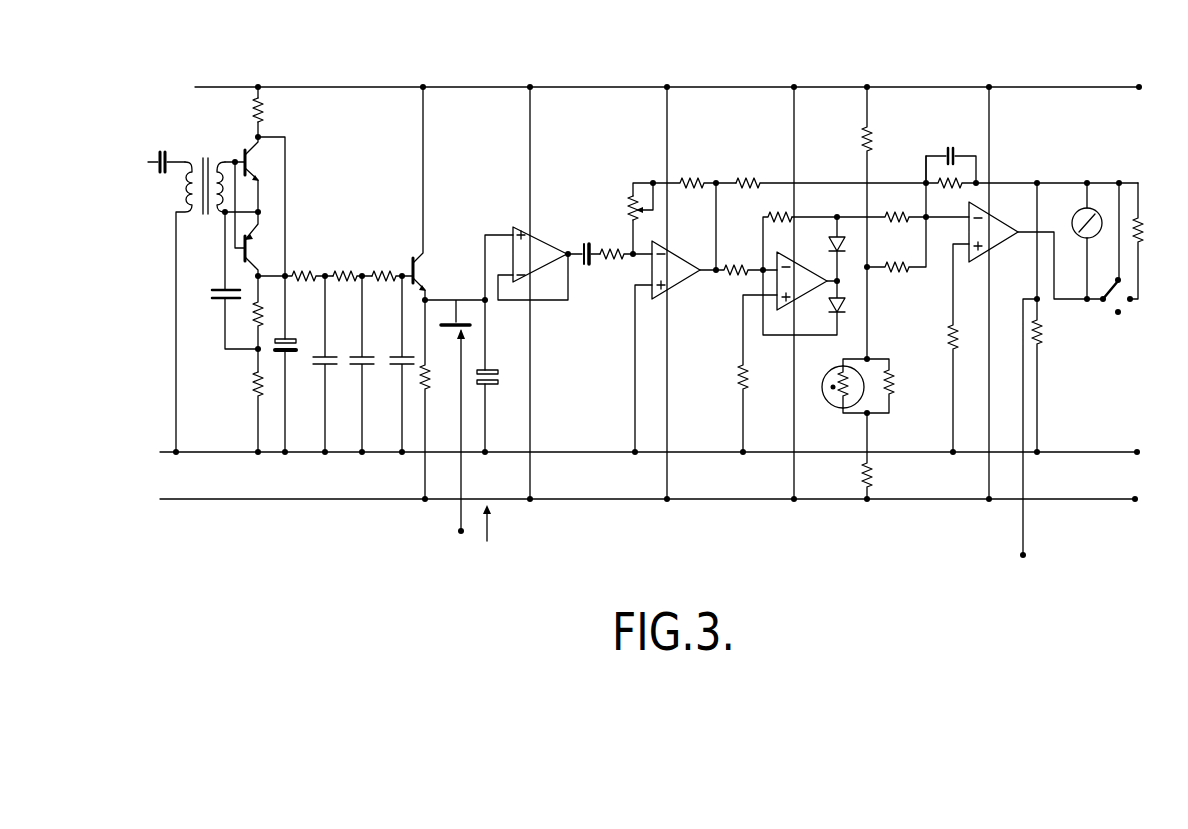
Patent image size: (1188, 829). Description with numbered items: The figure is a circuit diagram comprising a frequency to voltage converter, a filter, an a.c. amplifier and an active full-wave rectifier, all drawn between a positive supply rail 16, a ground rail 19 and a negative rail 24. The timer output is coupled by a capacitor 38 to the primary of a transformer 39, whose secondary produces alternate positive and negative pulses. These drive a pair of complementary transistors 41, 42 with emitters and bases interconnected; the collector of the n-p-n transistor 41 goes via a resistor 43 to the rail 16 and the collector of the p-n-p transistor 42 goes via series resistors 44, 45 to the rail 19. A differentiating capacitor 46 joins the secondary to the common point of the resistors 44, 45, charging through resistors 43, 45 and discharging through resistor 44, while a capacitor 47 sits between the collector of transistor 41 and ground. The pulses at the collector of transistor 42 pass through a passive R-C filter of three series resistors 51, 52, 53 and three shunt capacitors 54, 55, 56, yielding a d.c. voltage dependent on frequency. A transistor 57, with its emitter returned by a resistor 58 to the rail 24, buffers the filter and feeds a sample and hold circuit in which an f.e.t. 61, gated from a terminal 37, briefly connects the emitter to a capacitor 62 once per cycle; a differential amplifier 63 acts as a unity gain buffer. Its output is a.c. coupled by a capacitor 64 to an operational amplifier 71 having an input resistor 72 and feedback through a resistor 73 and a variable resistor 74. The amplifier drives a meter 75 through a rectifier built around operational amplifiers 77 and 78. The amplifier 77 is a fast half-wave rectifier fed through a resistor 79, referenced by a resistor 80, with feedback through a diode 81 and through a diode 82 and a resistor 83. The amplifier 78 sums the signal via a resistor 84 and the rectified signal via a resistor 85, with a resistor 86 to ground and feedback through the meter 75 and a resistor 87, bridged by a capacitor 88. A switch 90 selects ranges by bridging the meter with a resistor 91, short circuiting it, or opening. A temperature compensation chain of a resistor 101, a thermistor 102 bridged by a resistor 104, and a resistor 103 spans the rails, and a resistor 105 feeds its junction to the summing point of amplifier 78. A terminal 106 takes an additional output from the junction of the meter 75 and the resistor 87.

The rail 16 is at (610, 89).
The rail 19 is at (450, 454).
The rail 24 is at (593, 501).
The terminal 37 is at (459, 532).
The capacitor 38 is at (162, 149).
The transformer 39 is at (203, 152).
The n-p-n transistor 41 is at (262, 173).
The p-n-p transistor 42 is at (251, 248).
The resistor 43 is at (265, 111).
The resistor 44 is at (256, 319).
The resistor 45 is at (254, 392).
The capacitor 46 is at (214, 293).
The capacitor 47 is at (296, 343).
The resistor 51 is at (304, 265).
The resistor 52 is at (346, 265).
The resistor 53 is at (388, 265).
The capacitor 54 is at (322, 367).
The capacitor 55 is at (360, 367).
The capacitor 56 is at (400, 367).
The transistor 57 is at (429, 276).
The resistor 58 is at (431, 381).
The f.e.t. 61 is at (457, 318).
The capacitor 62 is at (493, 385).
The differential amplifier 63 is at (530, 269).
The capacitor 64 is at (585, 241).
The operational amplifier 71 is at (685, 281).
The input resistor 72 is at (613, 267).
The resistor 73 is at (693, 180).
The variable resistor 74 is at (628, 206).
The meter 75 is at (1092, 241).
The operational amplifier 77 is at (801, 301).
The operational amplifier 78 is at (996, 251).
The resistor 79 is at (737, 266).
The resistor 80 is at (738, 376).
The diode 81 is at (840, 323).
The diode 82 is at (842, 269).
The resistor 83 is at (768, 214).
The resistor 84 is at (756, 180).
The resistor 85 is at (880, 200).
The resistor 86 is at (949, 343).
The resistor 87 is at (1030, 198).
The capacitor 88 is at (951, 148).
The switch 90 is at (1111, 313).
The resistor 91 is at (1146, 241).
The resistor 101 is at (879, 141).
The thermistor 102 is at (835, 405).
The resistor 103 is at (877, 474).
The resistor 104 is at (898, 401).
The resistor 105 is at (898, 233).
The terminal 106 is at (1021, 554).